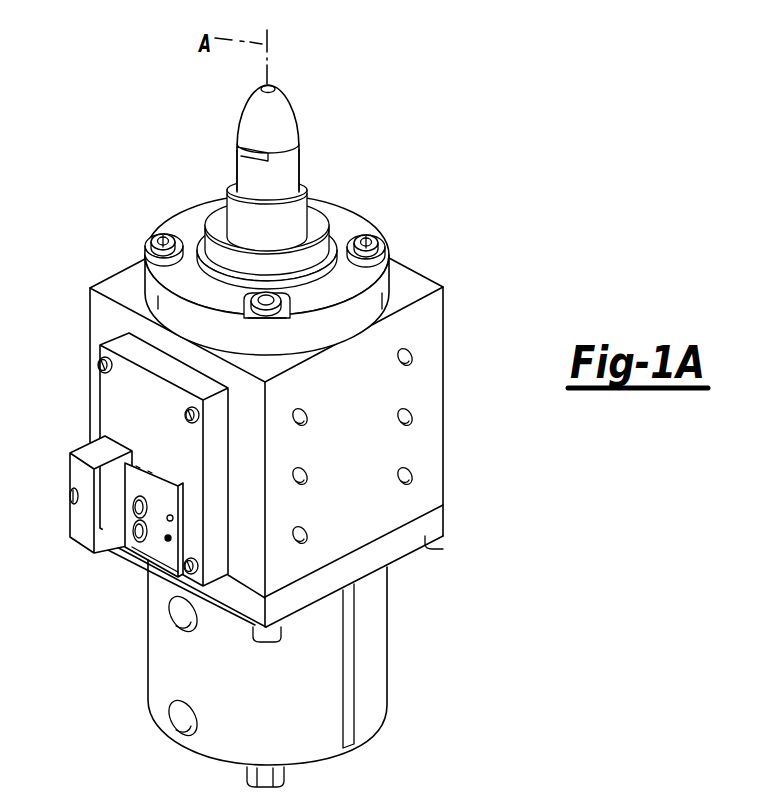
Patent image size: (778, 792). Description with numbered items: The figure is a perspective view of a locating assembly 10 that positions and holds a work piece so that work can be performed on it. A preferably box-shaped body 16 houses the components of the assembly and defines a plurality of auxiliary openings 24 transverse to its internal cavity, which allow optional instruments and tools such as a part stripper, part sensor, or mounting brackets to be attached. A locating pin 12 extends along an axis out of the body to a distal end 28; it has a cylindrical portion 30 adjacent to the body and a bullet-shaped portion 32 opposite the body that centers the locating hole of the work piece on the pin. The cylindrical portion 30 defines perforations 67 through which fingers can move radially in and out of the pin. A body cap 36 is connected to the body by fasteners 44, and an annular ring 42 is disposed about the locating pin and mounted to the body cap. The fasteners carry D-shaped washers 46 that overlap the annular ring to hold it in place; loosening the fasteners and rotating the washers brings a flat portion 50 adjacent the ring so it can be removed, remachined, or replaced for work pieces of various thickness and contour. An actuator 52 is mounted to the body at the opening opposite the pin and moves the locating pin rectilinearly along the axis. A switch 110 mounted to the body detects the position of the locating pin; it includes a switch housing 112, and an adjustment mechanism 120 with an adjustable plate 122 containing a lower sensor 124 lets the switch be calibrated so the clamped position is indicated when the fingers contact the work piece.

The locating assembly 10 is at (318, 420).
The locating pin 12 is at (295, 110).
The body 16 is at (443, 422).
The auxiliary openings 24 is at (411, 356).
The distal end 28 is at (286, 97).
The cylindrical portion 30 is at (293, 153).
The bullet-shaped portion 32 is at (278, 130).
The body cap 36 is at (355, 217).
The annular ring 42 is at (225, 192).
The fasteners 44 is at (163, 238).
The D-shaped washers 46 is at (133, 246).
The flat portion 50 is at (266, 321).
The actuator 52 is at (300, 707).
The perforations 67 is at (237, 147).
The switch 110 is at (86, 425).
The switch housing 112 is at (113, 382).
The adjustment mechanism 120 is at (127, 568).
The adjustable plate 122 is at (137, 490).
The lower sensor 124 is at (167, 542).